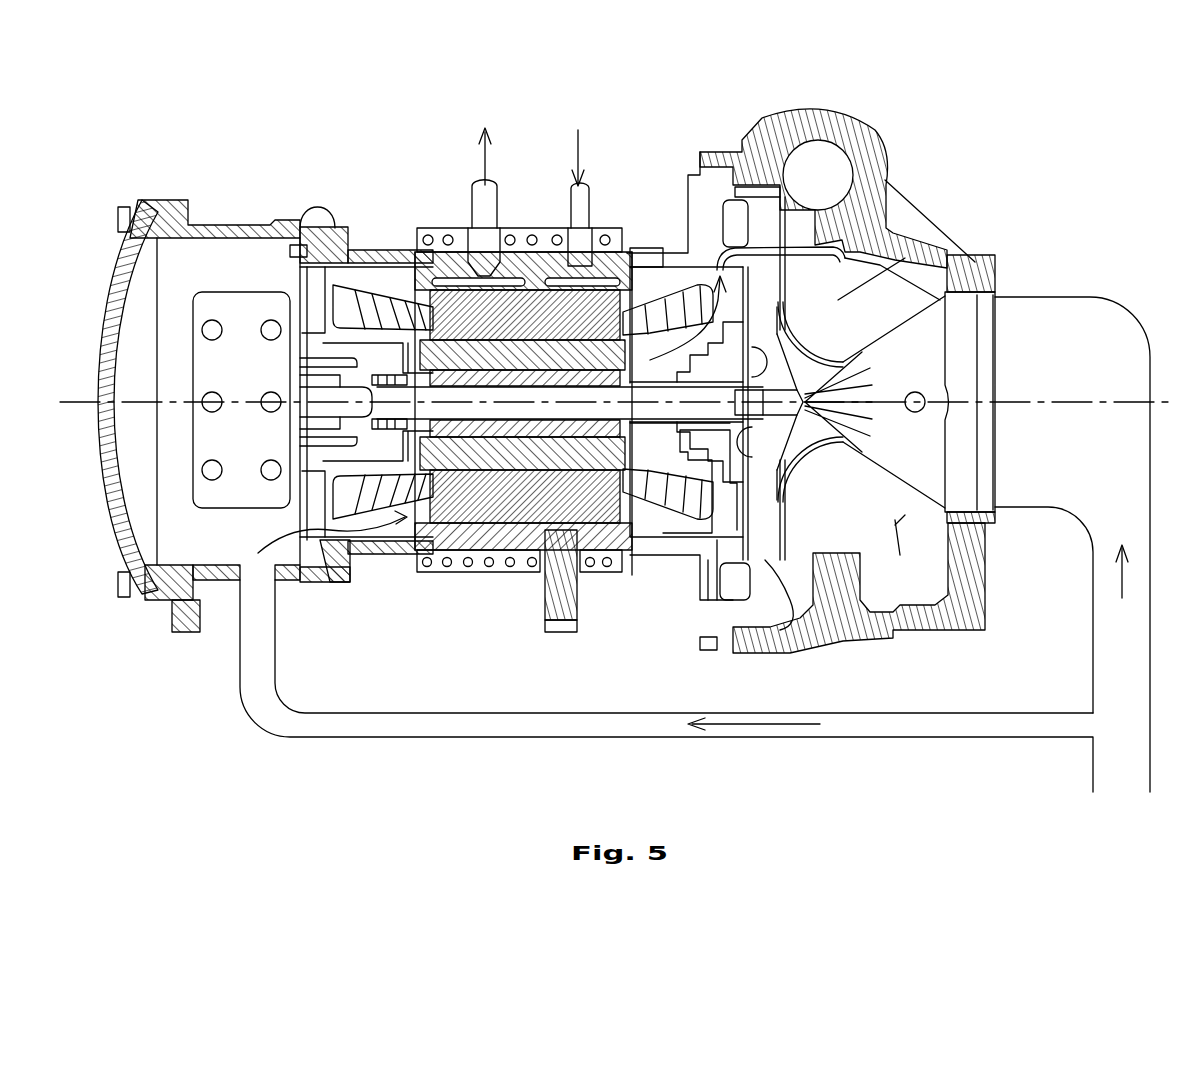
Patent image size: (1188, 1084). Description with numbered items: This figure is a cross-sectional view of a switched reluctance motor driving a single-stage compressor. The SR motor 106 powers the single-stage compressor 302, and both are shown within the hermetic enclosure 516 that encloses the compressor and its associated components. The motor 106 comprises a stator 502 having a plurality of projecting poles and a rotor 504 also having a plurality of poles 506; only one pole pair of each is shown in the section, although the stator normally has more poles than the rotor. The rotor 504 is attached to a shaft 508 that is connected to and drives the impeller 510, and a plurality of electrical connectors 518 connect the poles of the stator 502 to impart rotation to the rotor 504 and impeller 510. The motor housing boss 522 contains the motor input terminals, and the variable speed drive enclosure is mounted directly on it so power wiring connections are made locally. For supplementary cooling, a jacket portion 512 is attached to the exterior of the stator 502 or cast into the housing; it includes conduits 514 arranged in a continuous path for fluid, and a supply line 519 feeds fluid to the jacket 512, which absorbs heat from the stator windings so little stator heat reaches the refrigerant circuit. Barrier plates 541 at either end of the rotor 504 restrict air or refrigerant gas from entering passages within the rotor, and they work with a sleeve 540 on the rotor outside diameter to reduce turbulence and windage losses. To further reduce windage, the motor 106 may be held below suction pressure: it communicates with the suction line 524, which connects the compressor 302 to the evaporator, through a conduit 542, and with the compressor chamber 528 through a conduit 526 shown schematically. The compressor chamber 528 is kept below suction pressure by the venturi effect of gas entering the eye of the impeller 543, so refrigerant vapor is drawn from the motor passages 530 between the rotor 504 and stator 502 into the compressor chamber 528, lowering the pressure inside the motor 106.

The switched reluctance motor 106 is at (632, 82).
The single-stage compressor 302 is at (320, 148).
The stator 502 is at (440, 523).
The rotor 504 is at (457, 363).
The poles 506 is at (457, 230).
The shaft 508 is at (620, 560).
The impeller 510 is at (880, 300).
The jacket portion 512 is at (487, 566).
The conduits 514 is at (538, 230).
The hermetic enclosure 516 is at (103, 317).
The electrical connectors 518 is at (207, 393).
The supply line 519 is at (610, 240).
The motor housing boss 522 is at (243, 300).
The suction line 524 is at (1093, 628).
The conduit 526 is at (827, 262).
The compressor chamber 528 is at (928, 283).
The motor passages 530 is at (687, 273).
The sleeve 540 is at (480, 497).
The barrier plates 541 is at (415, 482).
The conduit 542 is at (973, 710).
The eye of the impeller 543 is at (803, 423).